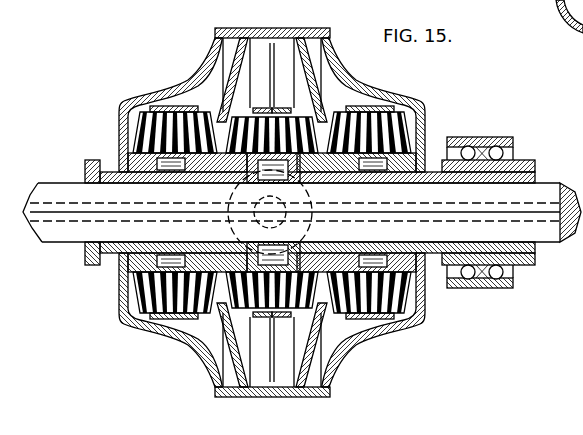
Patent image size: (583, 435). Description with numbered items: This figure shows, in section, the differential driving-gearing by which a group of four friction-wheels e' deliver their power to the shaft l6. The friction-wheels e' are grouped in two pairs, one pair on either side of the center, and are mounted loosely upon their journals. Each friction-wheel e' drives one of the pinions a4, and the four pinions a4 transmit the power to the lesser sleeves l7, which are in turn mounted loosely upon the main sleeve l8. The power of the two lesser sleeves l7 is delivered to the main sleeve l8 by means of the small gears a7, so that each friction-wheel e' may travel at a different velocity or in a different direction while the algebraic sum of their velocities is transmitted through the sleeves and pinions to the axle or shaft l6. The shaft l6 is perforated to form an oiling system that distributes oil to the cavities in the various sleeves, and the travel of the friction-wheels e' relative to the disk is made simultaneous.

The friction-wheel e' is at (272, 213).
The pinion a4 is at (272, 211).
The small gear a7 is at (296, 110).
The sleeve l7 is at (203, 204).
The main sleeve l8 is at (140, 242).
The shaft l6 is at (530, 204).